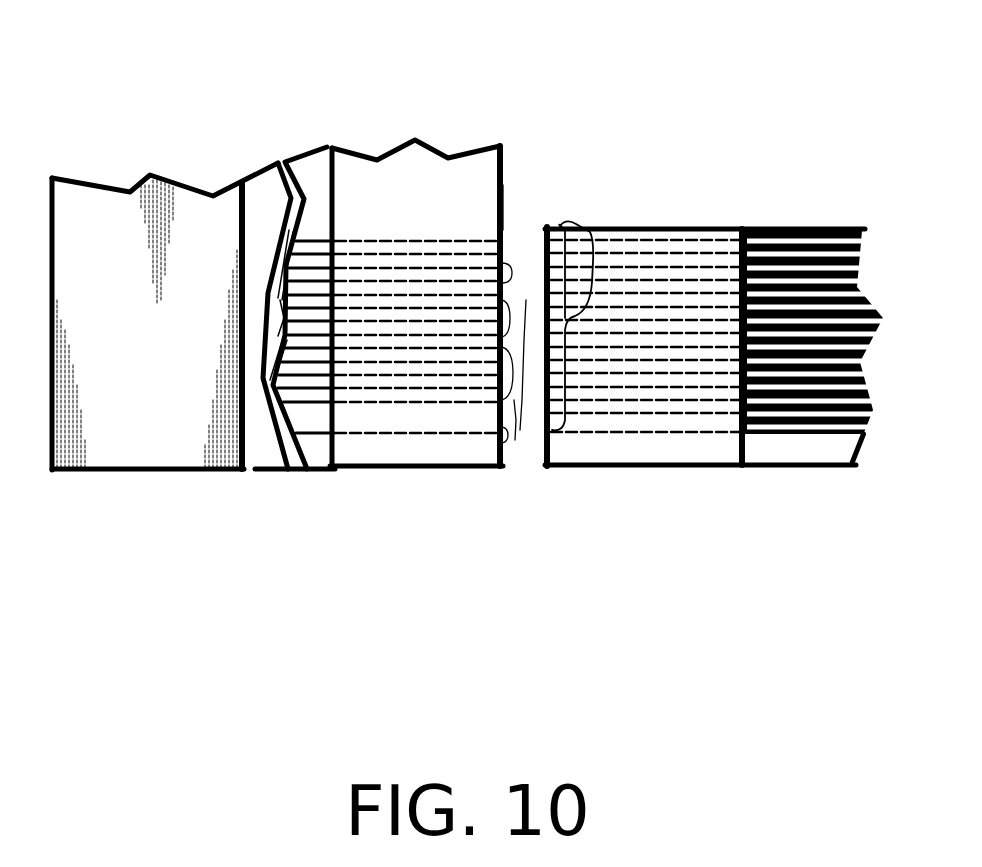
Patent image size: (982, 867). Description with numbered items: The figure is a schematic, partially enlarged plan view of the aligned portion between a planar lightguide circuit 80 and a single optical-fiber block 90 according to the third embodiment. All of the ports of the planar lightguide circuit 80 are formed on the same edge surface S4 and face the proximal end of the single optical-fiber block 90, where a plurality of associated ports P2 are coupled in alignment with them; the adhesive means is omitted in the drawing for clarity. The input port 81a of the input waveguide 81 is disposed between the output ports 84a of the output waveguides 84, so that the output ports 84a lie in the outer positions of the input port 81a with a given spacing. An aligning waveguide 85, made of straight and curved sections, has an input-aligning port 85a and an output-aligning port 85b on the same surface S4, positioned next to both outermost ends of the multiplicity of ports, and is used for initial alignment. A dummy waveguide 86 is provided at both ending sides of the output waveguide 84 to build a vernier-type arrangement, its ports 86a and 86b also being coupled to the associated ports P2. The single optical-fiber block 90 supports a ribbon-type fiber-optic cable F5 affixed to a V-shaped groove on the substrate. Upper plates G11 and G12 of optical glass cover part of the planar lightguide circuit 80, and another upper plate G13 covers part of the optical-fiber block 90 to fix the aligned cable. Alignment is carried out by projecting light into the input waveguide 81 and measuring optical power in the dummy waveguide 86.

The upper plate of optical glass G11 is at (165, 292).
The upper plate of optical glass G12 is at (416, 275).
The upper plate of optical glass G13 is at (705, 301).
The planar lightguide circuit 80 is at (391, 641).
The single optical-fiber block 90 is at (681, 625).
The input waveguide 81 is at (206, 319).
The output waveguide 84 is at (232, 308).
The aligning waveguide 85 is at (307, 314).
The dummy waveguide 86 is at (290, 277).
The input port 81a is at (595, 251).
The output port 84a is at (562, 314).
The input-aligning port 85a is at (481, 498).
The dummy waveguide port 86a is at (524, 483).
The output-aligning port 85b is at (530, 206).
The dummy waveguide port 86b is at (565, 180).
The edge surface S4 is at (524, 152).
The associated ports P2 is at (586, 290).
The ribbon-type fiber-optic cable F5 is at (816, 303).